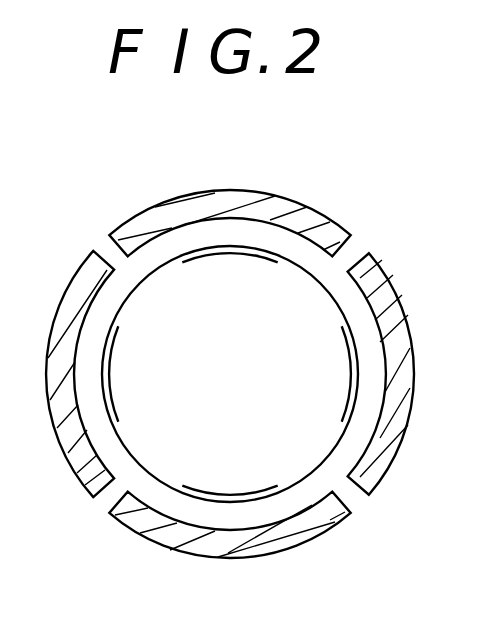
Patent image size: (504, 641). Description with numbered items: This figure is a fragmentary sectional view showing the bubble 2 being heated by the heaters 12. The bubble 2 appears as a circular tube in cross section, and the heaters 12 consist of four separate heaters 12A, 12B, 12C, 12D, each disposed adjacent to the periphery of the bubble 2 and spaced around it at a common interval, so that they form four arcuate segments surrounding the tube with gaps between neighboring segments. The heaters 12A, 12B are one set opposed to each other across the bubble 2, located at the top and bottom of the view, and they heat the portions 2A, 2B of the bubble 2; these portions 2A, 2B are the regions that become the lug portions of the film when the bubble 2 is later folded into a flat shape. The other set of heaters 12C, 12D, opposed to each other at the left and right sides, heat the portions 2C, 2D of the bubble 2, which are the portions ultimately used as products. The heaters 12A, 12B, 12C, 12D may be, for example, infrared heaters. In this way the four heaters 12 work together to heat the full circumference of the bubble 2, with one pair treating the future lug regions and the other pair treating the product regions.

The bubble 2 is at (322, 290).
The portion of the bubble 2A is at (225, 245).
The portion of the bubble 2B is at (235, 503).
The portion of the bubble 2C is at (105, 353).
The portion of the bubble 2D is at (357, 377).
The heaters 12 is at (237, 381).
The heater 12A is at (212, 202).
The heater 12B is at (243, 553).
The heater 12C is at (82, 460).
The heater 12D is at (388, 462).